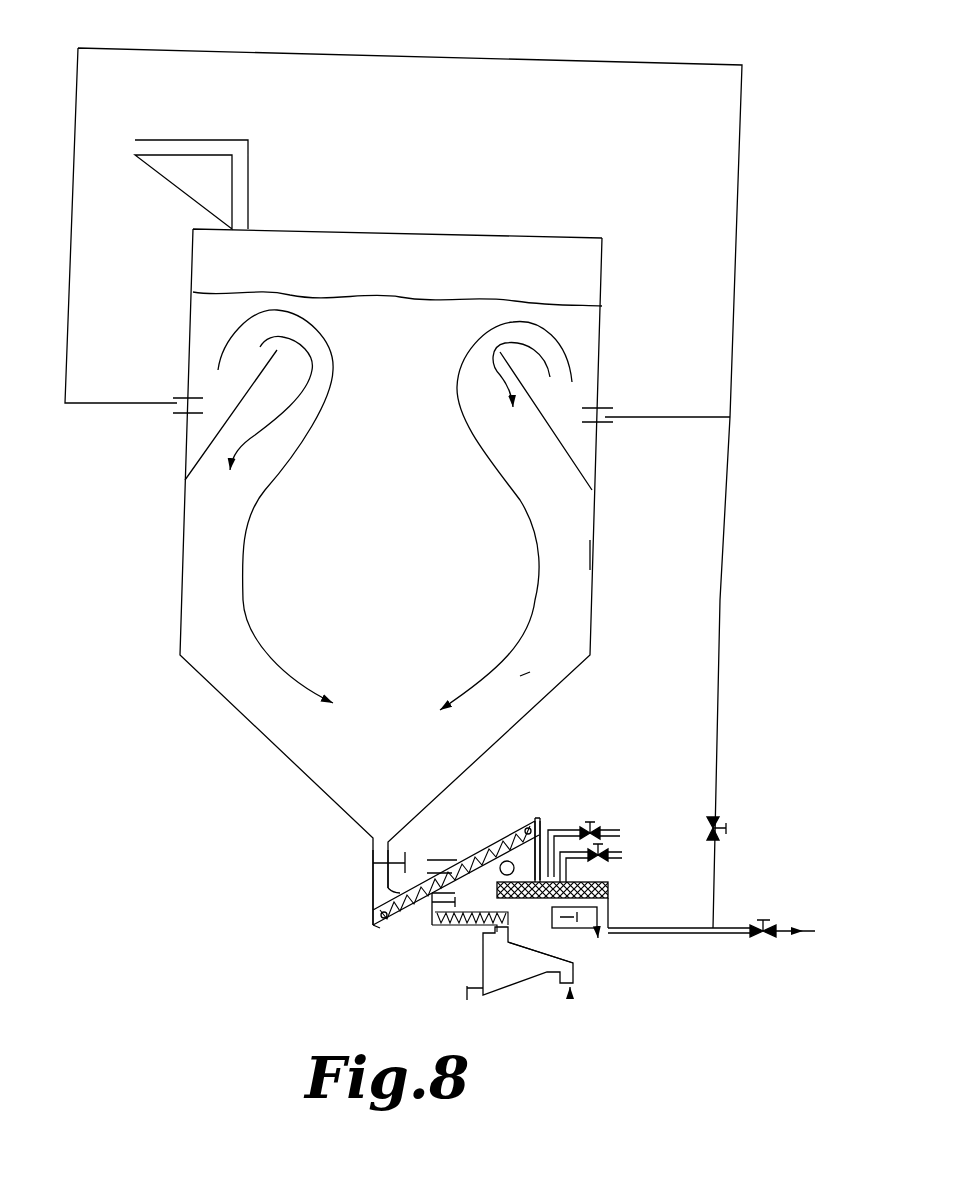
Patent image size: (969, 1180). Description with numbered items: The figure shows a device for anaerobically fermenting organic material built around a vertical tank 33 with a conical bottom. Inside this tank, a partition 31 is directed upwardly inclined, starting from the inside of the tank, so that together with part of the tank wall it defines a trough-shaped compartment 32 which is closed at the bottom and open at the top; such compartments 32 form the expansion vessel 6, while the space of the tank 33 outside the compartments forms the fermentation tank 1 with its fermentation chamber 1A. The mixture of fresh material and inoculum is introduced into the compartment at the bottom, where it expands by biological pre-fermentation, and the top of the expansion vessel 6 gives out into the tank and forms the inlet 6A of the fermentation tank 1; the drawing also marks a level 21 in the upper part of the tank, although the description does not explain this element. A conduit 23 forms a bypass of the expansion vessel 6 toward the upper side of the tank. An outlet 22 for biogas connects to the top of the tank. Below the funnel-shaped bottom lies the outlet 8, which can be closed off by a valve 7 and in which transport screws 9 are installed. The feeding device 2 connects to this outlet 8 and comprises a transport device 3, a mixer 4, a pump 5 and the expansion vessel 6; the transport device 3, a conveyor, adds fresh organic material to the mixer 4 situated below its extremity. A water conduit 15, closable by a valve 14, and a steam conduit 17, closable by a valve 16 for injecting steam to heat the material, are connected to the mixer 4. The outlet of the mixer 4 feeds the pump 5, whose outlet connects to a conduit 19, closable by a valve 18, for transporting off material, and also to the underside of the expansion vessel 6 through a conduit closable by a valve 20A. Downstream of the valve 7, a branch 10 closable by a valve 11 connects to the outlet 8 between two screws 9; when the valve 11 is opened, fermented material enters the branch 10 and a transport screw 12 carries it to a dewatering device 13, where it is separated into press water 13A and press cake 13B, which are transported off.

The fermentation tank 1 is at (594, 598).
The fermentation chamber 1A is at (528, 678).
The feeding device 2 is at (616, 893).
The transport device 3 is at (514, 834).
The mixer 4 is at (540, 927).
The pump 5 is at (597, 937).
The expansion vessel 6 is at (593, 345).
The inlet 6A is at (240, 355).
The valve 7 is at (400, 857).
The outlet 8 is at (365, 847).
The transport screws 9 is at (395, 887).
The branch 10 is at (427, 912).
The valve 11 is at (448, 891).
The transport screw 12 is at (463, 926).
The dewatering device 13 is at (518, 963).
The press water 13A is at (467, 990).
The press cake 13B is at (573, 991).
The valve 14 is at (592, 822).
The water conduit 15 is at (560, 820).
The valve 16 is at (603, 864).
The steam conduit 17 is at (588, 874).
The valve 18 is at (770, 937).
The conduit 19 is at (788, 928).
The valve 20A is at (720, 812).
The liquid level 21 is at (467, 303).
The outlet for biogas 22 is at (178, 145).
The conduit 23 is at (400, 50).
The partition 31 is at (203, 457).
The compartment 32 is at (207, 427).
The vertical tank 33 is at (597, 548).